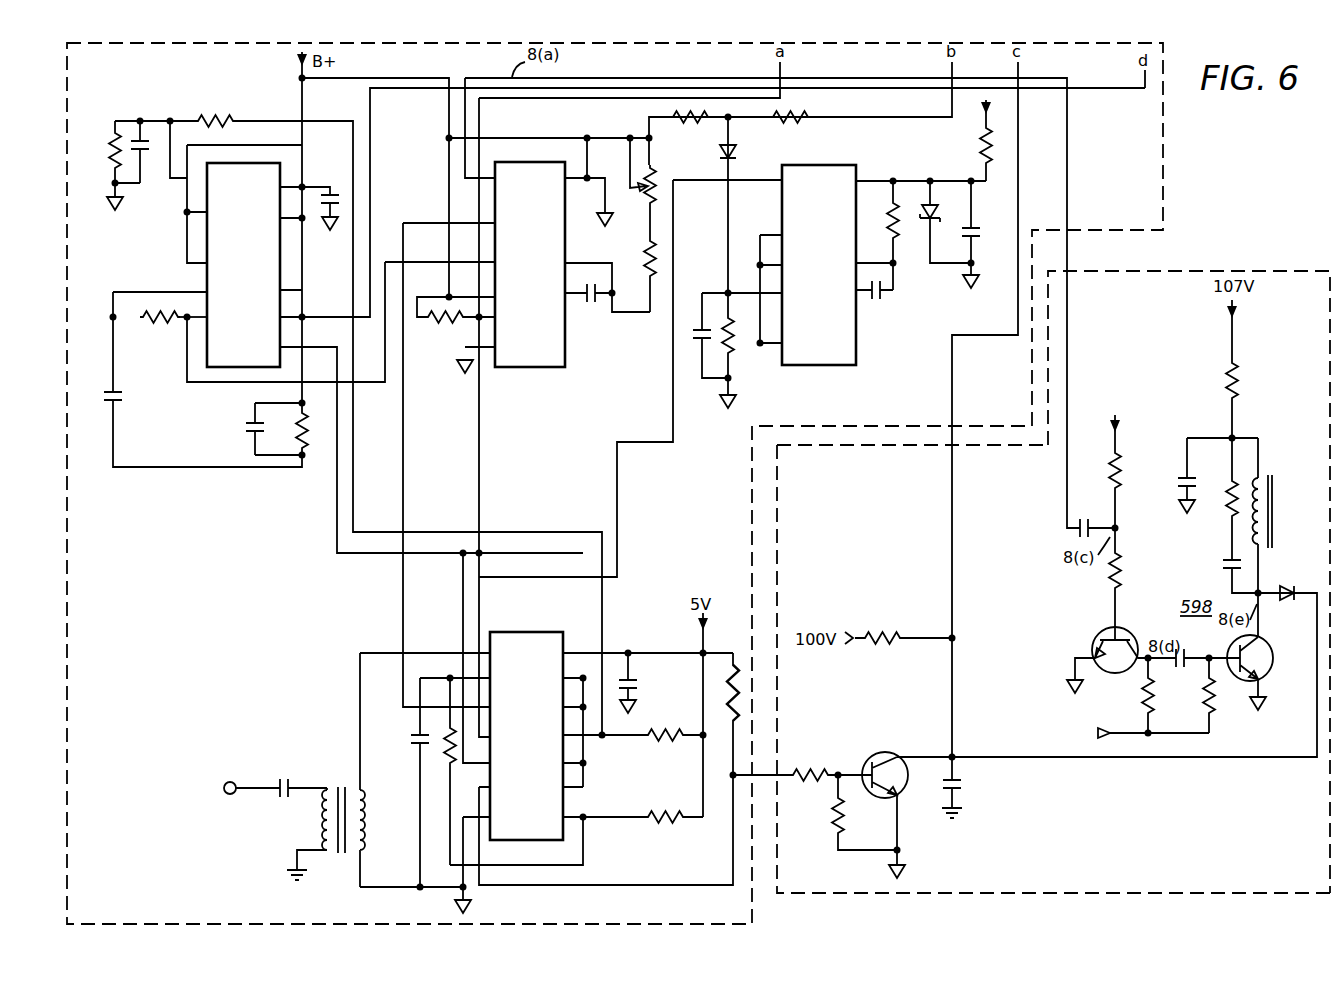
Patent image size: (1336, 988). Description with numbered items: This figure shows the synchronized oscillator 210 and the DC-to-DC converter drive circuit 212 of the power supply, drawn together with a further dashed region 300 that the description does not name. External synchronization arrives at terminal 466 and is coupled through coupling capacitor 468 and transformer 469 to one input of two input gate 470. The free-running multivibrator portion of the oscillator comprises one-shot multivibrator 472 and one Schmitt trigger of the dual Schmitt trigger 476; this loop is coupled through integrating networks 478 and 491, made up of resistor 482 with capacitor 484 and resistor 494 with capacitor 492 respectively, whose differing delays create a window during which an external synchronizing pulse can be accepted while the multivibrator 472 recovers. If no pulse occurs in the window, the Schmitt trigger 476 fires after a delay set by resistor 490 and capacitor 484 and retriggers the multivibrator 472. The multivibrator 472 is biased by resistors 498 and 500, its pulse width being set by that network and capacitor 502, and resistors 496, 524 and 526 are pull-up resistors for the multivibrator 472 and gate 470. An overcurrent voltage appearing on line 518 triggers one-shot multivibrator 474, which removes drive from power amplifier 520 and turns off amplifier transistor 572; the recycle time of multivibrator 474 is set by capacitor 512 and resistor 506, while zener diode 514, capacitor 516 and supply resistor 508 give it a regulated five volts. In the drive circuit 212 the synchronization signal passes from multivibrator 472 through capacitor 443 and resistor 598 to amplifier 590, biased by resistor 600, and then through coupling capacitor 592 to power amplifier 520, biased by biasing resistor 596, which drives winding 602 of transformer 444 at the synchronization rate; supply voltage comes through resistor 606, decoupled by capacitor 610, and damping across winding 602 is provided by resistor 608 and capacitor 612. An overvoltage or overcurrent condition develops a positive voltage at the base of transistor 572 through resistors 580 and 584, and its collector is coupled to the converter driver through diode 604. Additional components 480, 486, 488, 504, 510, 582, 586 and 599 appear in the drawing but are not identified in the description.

The synchronized oscillator 210 is at (1165, 133).
The DC-to-DC converter drive circuit 212 is at (1212, 262).
The driver circuit 300 is at (1150, 924).
The capacitor 443 is at (1082, 523).
The transformer 444 is at (1264, 475).
The terminal 466 is at (231, 781).
The coupling capacitor 468 is at (282, 776).
The transformer 469 is at (340, 855).
The two input gate 470 is at (545, 661).
The one-shot multivibrator 472 is at (550, 194).
The one-shot multivibrator 474 is at (837, 194).
The dual Schmitt trigger 476 is at (262, 194).
The integrating network 478 is at (128, 173).
The RC network 480 is at (277, 442).
The resistor 482 is at (115, 142).
The capacitor 484 is at (142, 140).
The resistor 486 is at (307, 440).
The capacitor 488 is at (345, 198).
The resistor 490 is at (217, 118).
The integrating network 491 is at (428, 735).
The capacitor 492 is at (418, 745).
The resistor 494 is at (447, 762).
The pull-up resistor 496 is at (443, 330).
The resistor 498 is at (657, 262).
The resistor 500 is at (654, 184).
The capacitor 502 is at (591, 302).
The resistor 504 is at (735, 347).
The resistor 506 is at (881, 293).
The supply resistor 508 is at (983, 133).
The capacitor 510 is at (708, 322).
The capacitor 512 is at (895, 245).
The zener diode 514 is at (940, 220).
The capacitor 516 is at (975, 230).
The line 518 is at (879, 120).
The power amplifier 520 is at (1262, 648).
The pull-up resistor 524 is at (688, 813).
The pull-up resistor 526 is at (688, 730).
The amplifier transistor 572 is at (880, 752).
The resistor 580 is at (810, 770).
The resistor 582 is at (888, 633).
The resistor 584 is at (836, 812).
The capacitor 586 is at (960, 790).
The amplifier 590 is at (1107, 630).
The coupling capacitor 592 is at (1175, 679).
The biasing resistor 596 is at (1215, 700).
The resistor 598 is at (1123, 566).
The resistor 599 is at (1145, 694).
The resistor 600 is at (1120, 455).
The winding 602 is at (1262, 545).
The diode 604 is at (1290, 605).
The resistor 606 is at (1240, 372).
The resistor 608 is at (1228, 495).
The capacitor 610 is at (1182, 486).
The capacitor 612 is at (1226, 565).